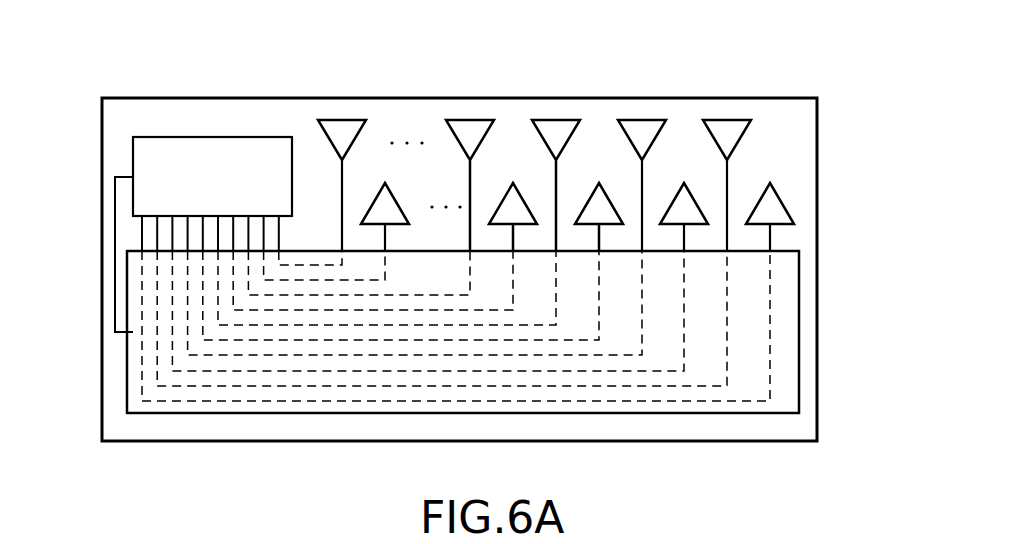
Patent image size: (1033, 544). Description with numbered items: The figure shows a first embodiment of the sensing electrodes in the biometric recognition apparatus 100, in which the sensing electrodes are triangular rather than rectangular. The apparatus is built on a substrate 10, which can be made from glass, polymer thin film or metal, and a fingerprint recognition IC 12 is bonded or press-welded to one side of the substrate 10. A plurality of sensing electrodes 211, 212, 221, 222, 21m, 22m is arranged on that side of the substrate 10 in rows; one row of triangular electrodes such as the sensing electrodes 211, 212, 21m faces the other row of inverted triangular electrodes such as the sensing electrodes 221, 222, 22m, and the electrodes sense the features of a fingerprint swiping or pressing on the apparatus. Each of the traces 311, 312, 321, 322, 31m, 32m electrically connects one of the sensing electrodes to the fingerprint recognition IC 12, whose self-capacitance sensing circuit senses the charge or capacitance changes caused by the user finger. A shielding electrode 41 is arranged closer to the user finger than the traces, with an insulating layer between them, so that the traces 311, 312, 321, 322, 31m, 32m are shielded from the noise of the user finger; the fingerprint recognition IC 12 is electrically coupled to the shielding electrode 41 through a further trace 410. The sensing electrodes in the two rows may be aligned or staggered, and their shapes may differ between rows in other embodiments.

The biometric recognition apparatus 100 is at (504, 28).
The substrate 10 is at (787, 108).
The fingerprint recognition IC 12 is at (168, 153).
The trace 410 is at (113, 245).
The shielding electrode 41 is at (787, 403).
The sensing electrode 22m is at (335, 125).
The trace 32m is at (340, 182).
The sensing electrode 21m is at (390, 205).
The trace 31m is at (388, 237).
The sensing electrode 222 is at (637, 125).
The trace 322 is at (640, 197).
The sensing electrode 221 is at (722, 125).
The trace 321 is at (727, 180).
The sensing electrode 212 is at (678, 208).
The trace 312 is at (683, 237).
The sensing electrode 211 is at (778, 212).
The trace 311 is at (772, 238).